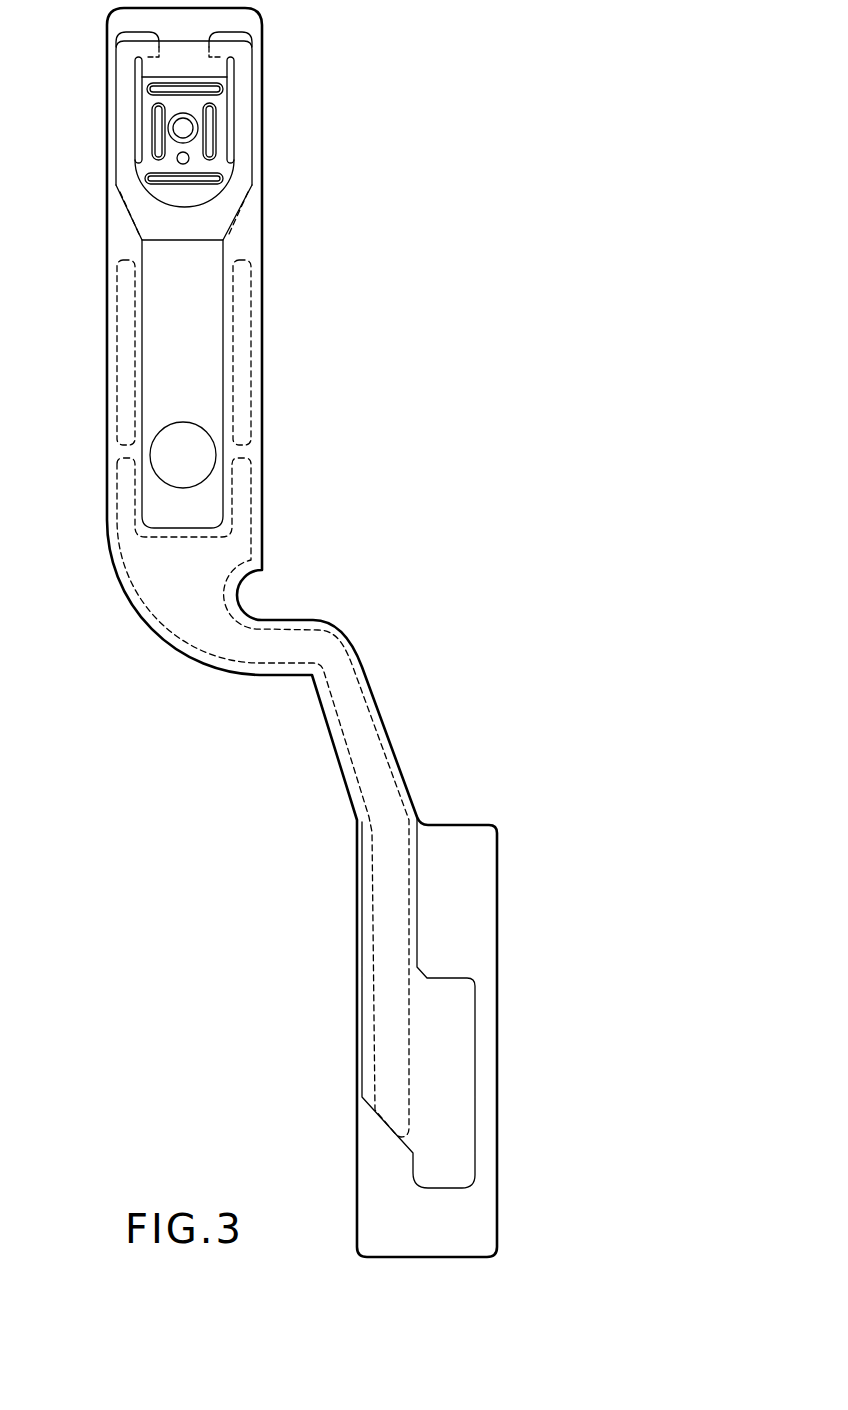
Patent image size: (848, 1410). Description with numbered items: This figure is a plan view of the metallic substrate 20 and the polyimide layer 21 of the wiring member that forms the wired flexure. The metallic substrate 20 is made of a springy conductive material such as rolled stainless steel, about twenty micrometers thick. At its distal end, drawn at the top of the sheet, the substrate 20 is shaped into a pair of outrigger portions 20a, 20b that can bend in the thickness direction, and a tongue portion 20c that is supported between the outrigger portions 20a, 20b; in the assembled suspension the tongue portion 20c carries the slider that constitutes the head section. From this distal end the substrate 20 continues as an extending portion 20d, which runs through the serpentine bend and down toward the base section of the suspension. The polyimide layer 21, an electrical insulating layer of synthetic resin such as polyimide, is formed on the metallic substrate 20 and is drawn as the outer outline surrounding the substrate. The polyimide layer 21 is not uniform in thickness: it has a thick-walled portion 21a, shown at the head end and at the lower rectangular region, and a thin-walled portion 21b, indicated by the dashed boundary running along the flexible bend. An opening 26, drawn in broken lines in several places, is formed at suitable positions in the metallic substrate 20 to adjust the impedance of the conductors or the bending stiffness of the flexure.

The metallic substrate 20 is at (160, 322).
The outrigger portion 20a is at (112, 145).
The outrigger portion 20b is at (257, 155).
The tongue portion 20c is at (176, 198).
The extending portion 20d is at (453, 822).
The polyimide layer 21 is at (232, 553).
The thick-walled portion 21a is at (125, 85).
The thin-walled portion 21b is at (255, 338).
The opening 26 is at (122, 393).